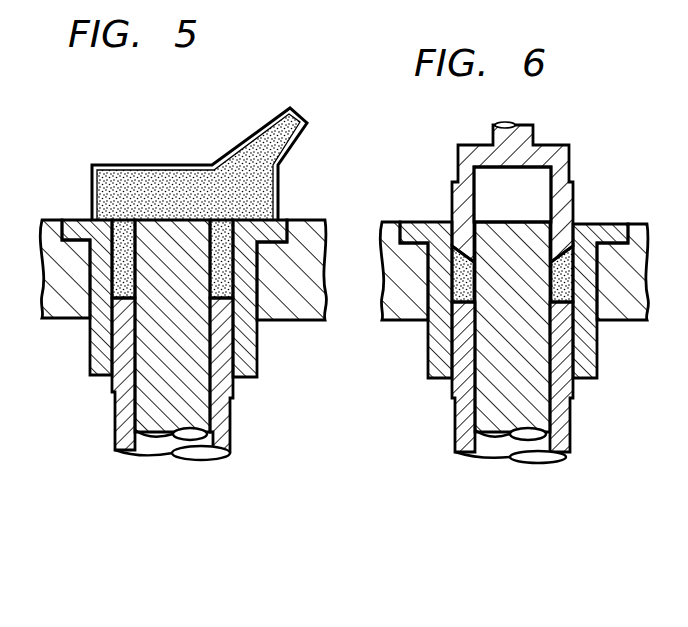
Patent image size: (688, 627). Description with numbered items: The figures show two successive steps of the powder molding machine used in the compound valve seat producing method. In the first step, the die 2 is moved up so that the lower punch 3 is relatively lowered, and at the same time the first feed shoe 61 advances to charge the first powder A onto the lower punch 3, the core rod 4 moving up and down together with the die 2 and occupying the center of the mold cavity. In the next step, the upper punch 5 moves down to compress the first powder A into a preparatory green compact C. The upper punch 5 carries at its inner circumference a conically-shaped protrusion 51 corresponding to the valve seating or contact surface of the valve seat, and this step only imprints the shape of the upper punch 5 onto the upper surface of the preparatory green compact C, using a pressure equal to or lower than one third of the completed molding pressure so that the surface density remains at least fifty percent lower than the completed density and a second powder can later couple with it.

In FIG. 5, the die 2 is at (71, 226).
In FIG. 6, the die 2 is at (432, 345).
In FIG. 5, the lower punch 3 is at (112, 387).
In FIG. 5, the first feed shoe 61 is at (232, 178).
In FIG. 5, the first powder A is at (122, 245).
In FIG. 6, the first powder A is at (445, 246).
In FIG. 6, the core rod 4 is at (492, 408).
In FIG. 6, the upper punch 5 is at (565, 169).
In FIG. 6, the conically-shaped protrusion 51 is at (544, 248).
In FIG. 6, the preparatory green compact C is at (575, 245).